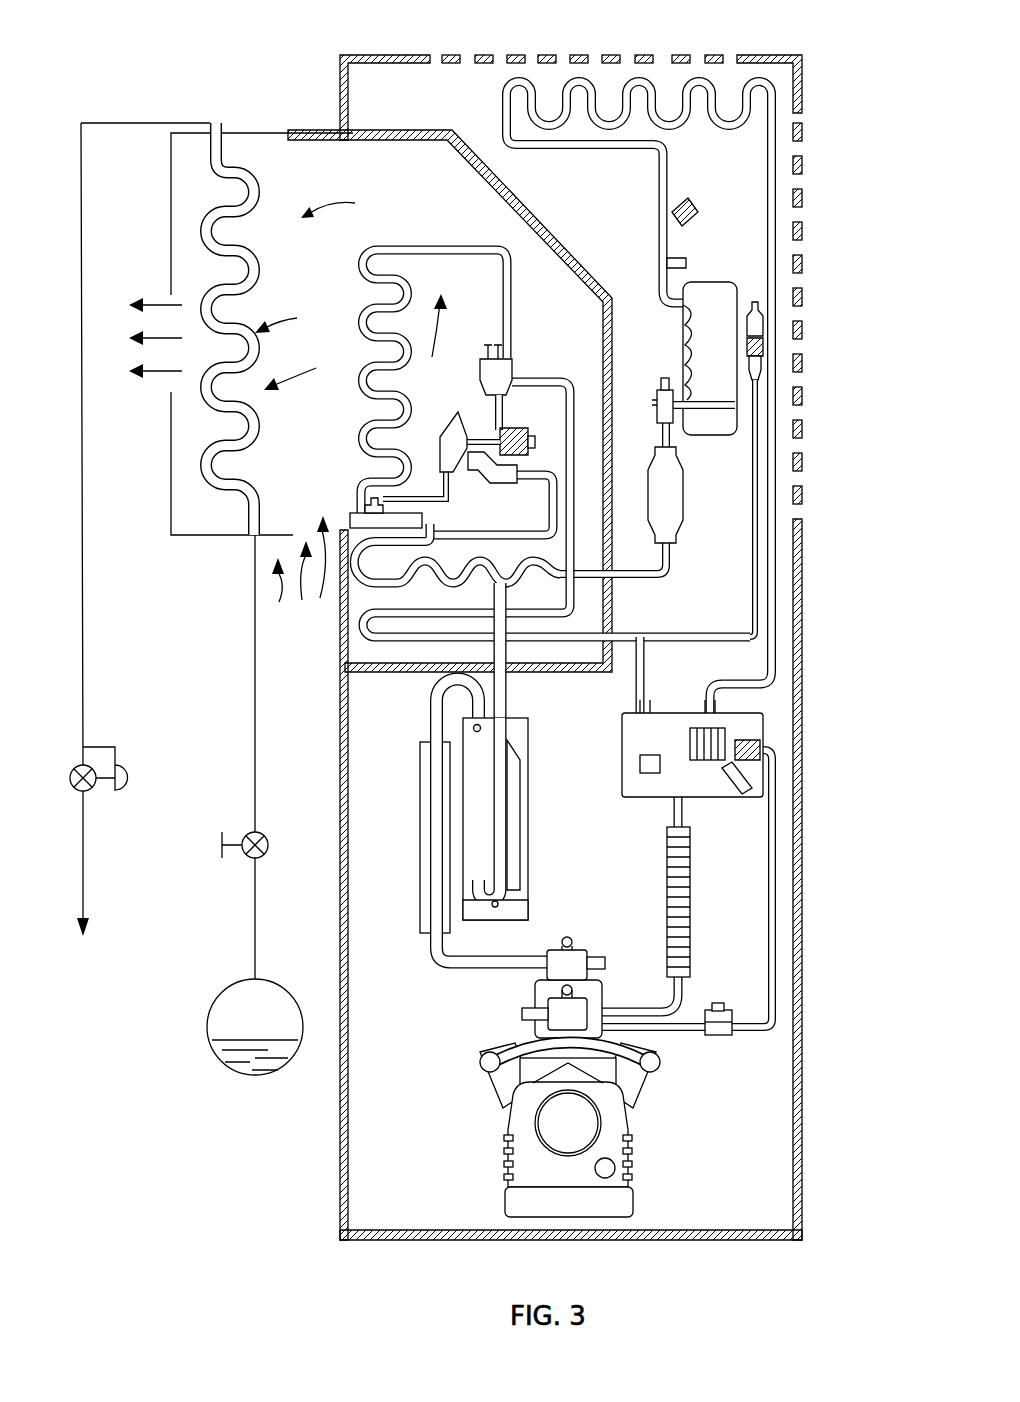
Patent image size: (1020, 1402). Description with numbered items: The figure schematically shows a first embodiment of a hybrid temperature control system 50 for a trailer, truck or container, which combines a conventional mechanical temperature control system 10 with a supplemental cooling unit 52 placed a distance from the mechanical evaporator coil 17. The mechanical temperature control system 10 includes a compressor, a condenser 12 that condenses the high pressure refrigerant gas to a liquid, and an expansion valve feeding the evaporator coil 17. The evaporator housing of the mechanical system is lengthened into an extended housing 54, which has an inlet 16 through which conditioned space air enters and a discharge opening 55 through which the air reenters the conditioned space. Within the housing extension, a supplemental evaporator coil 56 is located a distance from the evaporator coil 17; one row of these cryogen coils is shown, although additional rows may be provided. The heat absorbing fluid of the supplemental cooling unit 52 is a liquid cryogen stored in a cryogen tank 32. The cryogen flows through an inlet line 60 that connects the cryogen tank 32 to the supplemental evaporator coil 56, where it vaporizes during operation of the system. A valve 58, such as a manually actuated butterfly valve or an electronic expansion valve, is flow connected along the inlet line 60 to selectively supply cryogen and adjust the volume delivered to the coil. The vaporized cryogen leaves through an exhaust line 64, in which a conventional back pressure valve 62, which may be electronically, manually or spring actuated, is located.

The mechanical temperature control system 10 is at (820, 95).
The condenser 12 is at (701, 134).
The evaporator inlet 16 is at (292, 533).
The evaporator coil 17 is at (362, 308).
The cryogen tank 32 is at (197, 1020).
The hybrid temperature control system 50 is at (828, 779).
The supplemental cooling unit 52 is at (153, 102).
The extended housing 54 is at (296, 593).
The discharge opening 55 is at (170, 297).
The supplemental evaporator coil 56 is at (257, 198).
The valve 58 is at (258, 832).
The inlet line 60 is at (255, 700).
The back pressure valve 62 is at (83, 762).
The exhaust line 64 is at (82, 513).